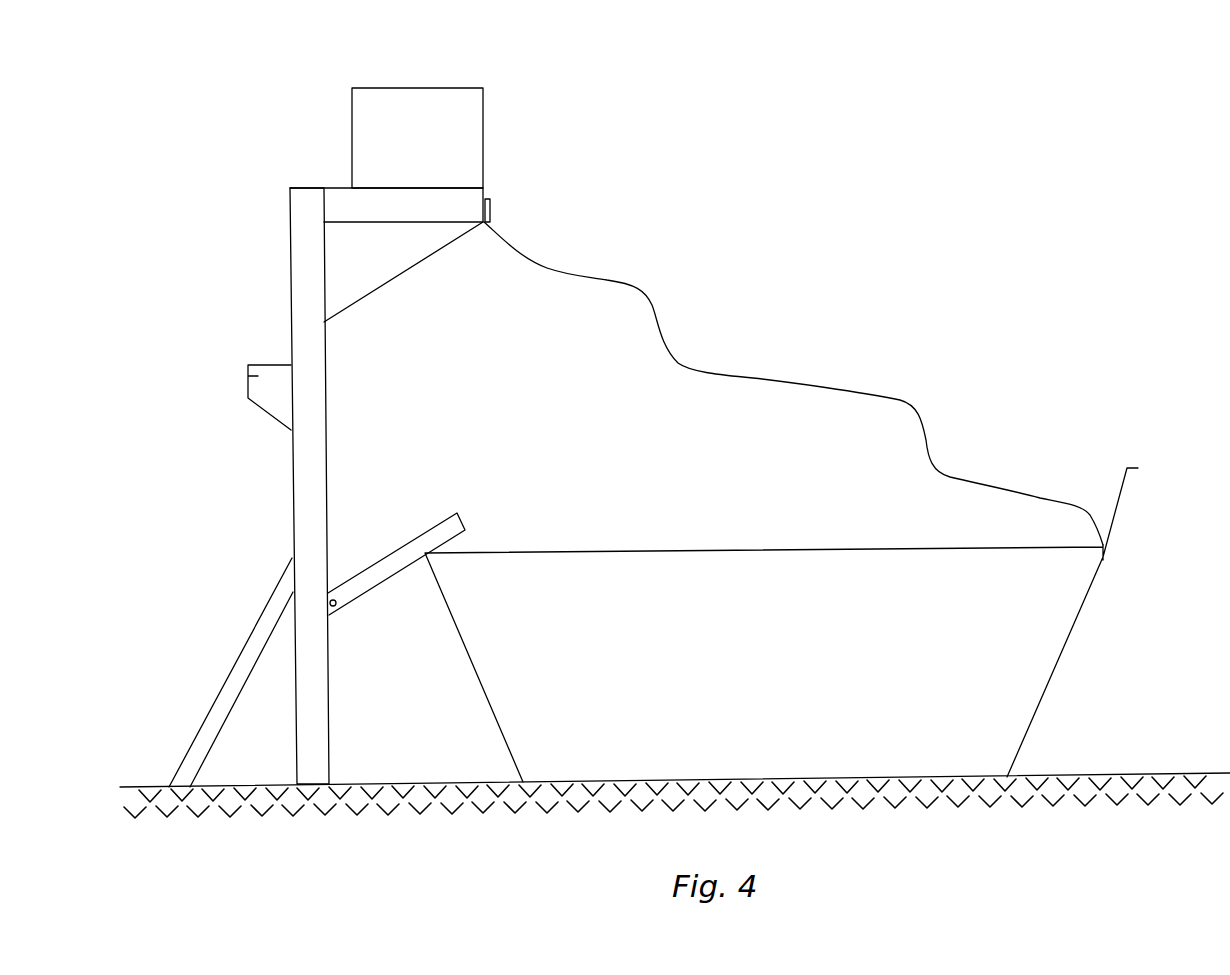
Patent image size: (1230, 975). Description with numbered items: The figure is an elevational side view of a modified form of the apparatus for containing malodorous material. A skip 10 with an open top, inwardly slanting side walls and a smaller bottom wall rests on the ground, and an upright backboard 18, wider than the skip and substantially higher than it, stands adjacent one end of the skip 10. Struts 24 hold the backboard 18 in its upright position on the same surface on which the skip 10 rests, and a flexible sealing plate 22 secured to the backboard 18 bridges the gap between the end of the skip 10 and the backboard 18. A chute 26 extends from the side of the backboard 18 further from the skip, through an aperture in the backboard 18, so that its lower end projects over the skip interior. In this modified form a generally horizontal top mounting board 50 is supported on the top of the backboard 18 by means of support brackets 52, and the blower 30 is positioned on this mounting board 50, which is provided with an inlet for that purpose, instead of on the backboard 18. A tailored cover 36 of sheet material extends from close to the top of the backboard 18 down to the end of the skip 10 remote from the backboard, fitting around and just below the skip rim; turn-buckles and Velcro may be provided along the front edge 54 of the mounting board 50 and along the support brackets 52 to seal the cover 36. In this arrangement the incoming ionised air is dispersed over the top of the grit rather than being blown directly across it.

The skip 10 is at (778, 690).
The backboard 18 is at (313, 460).
The flexible sealing plate 22 is at (370, 572).
The struts 24 is at (258, 627).
The chute 26 is at (258, 376).
The blower 30 is at (425, 93).
The cover 36 is at (678, 363).
The mounting board 50 is at (467, 207).
The support brackets 52 is at (392, 273).
The front edge 54 is at (487, 193).